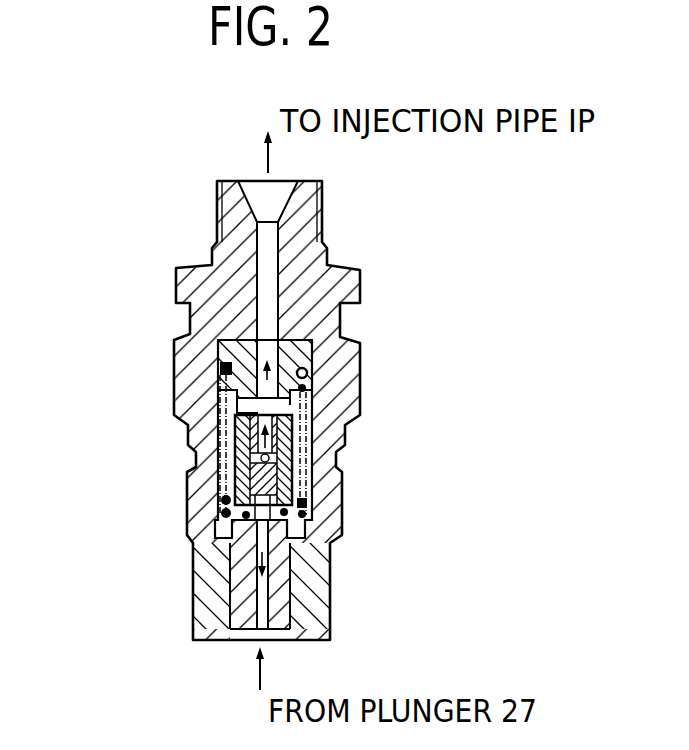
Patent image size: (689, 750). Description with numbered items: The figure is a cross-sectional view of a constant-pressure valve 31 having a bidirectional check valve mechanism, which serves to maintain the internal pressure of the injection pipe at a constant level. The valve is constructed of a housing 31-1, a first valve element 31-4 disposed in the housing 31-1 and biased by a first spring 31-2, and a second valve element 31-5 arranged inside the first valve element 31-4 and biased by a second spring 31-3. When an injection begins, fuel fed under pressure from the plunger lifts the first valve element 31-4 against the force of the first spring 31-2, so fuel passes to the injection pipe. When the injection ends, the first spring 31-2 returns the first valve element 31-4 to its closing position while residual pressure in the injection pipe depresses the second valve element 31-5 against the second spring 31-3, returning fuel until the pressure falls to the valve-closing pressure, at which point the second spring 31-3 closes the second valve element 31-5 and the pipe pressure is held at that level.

The constant-pressure valve 31 is at (366, 367).
The housing 31-1 is at (336, 347).
The first spring 31-2 is at (214, 428).
The second spring 31-3 is at (304, 503).
The first valve element 31-4 is at (240, 462).
The second valve element 31-5 is at (272, 463).